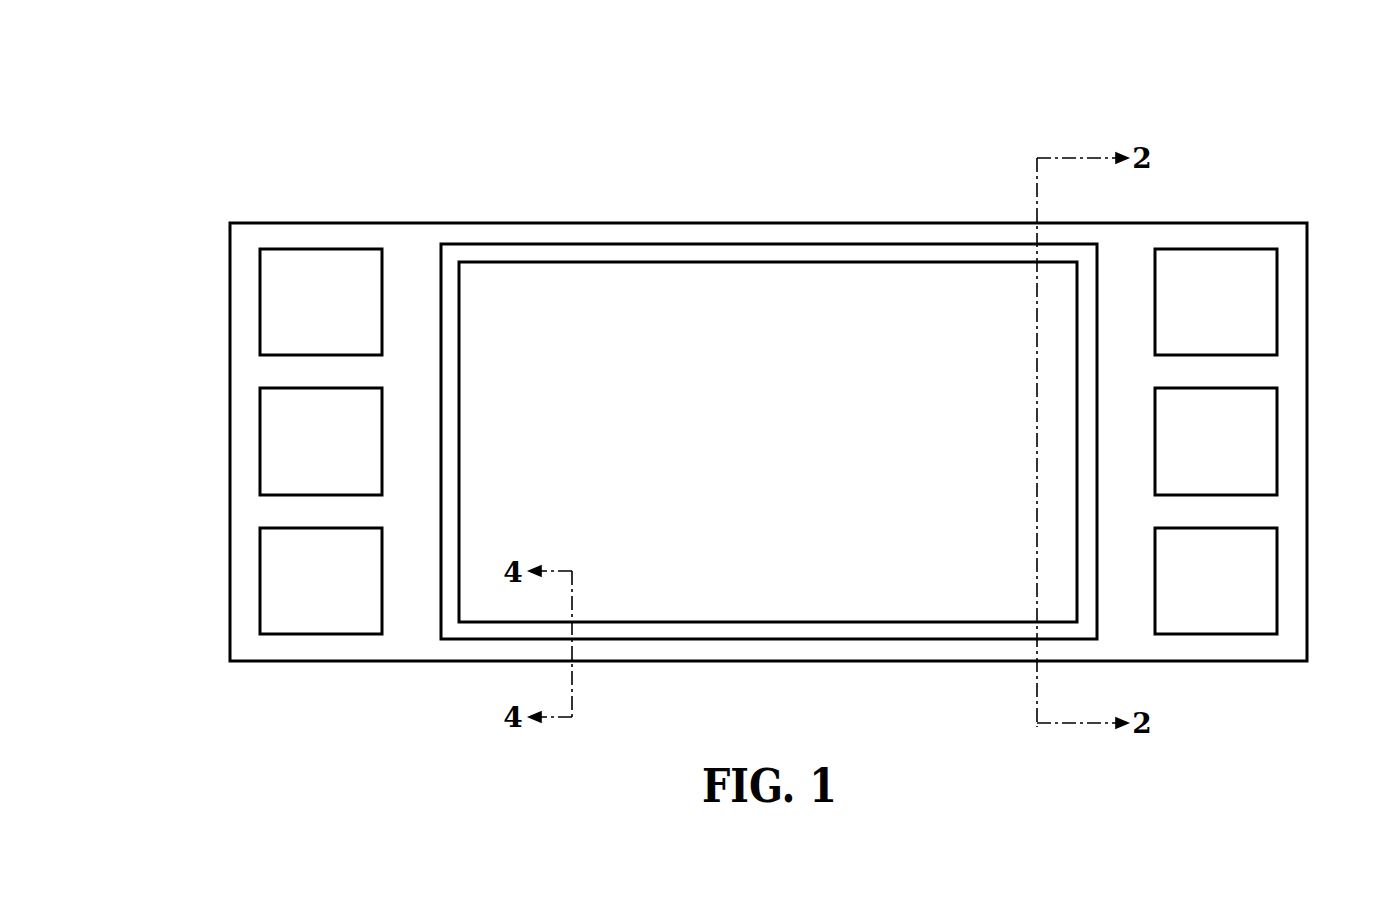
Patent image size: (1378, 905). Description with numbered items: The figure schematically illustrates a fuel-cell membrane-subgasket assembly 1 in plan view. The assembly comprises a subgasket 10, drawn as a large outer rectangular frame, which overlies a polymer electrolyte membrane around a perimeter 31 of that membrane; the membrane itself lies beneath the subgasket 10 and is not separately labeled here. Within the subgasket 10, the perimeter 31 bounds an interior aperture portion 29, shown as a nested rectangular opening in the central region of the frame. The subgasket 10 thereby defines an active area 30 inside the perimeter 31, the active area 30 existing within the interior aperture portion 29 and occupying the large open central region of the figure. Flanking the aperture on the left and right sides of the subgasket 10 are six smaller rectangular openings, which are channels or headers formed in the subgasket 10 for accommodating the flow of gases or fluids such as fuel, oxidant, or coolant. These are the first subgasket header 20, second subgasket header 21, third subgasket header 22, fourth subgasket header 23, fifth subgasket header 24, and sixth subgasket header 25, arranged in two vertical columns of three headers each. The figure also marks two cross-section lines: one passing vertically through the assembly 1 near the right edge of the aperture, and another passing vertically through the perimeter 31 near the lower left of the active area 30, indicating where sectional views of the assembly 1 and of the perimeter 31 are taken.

The fuel-cell membrane-subgasket assembly 1 is at (1301, 108).
The subgasket 10 is at (683, 238).
The first subgasket header 20 is at (1256, 594).
The second subgasket header 21 is at (280, 316).
The third subgasket header 22 is at (280, 594).
The fourth subgasket header 23 is at (1256, 316).
The fifth subgasket header 24 is at (280, 450).
The sixth subgasket header 25 is at (1256, 450).
The interior aperture portion 29 is at (806, 247).
The active area 30 is at (894, 587).
The perimeter 31 is at (585, 252).